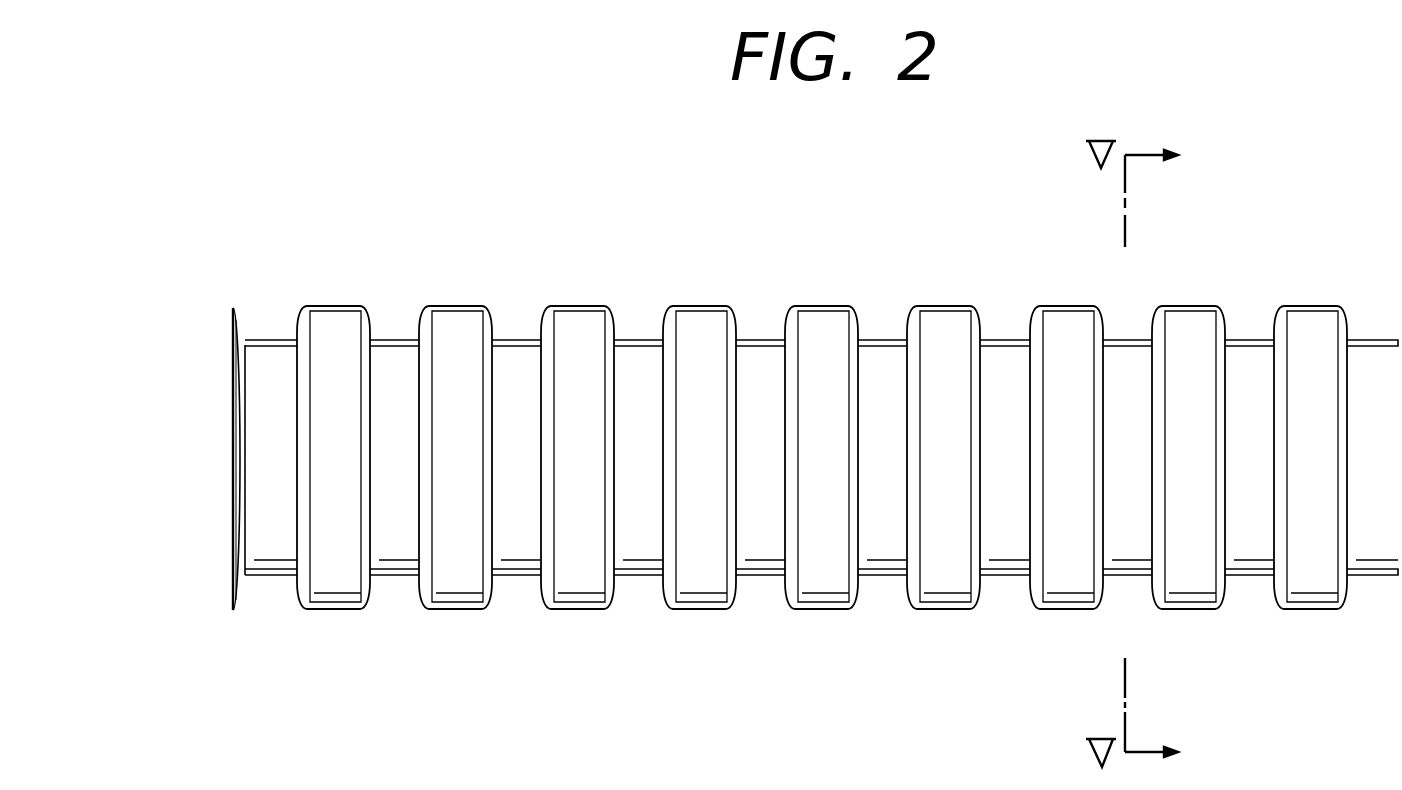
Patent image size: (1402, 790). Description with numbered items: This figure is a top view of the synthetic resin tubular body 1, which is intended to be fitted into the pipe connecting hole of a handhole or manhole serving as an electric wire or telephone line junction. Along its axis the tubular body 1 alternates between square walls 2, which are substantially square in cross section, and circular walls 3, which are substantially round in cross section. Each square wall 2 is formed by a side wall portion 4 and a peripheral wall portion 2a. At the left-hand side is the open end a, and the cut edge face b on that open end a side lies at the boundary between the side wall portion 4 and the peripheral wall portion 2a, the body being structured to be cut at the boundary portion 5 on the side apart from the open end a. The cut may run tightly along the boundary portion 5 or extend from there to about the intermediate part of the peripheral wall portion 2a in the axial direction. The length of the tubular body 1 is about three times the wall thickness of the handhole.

The tubular body 1 is at (1301, 245).
The square wall 2 is at (818, 305).
The peripheral wall portion 2a is at (575, 315).
The circular wall 3 is at (1012, 352).
The side wall portion 4 is at (668, 330).
The boundary portion 5 is at (355, 308).
The open end a is at (242, 467).
The cut edge face b is at (235, 568).